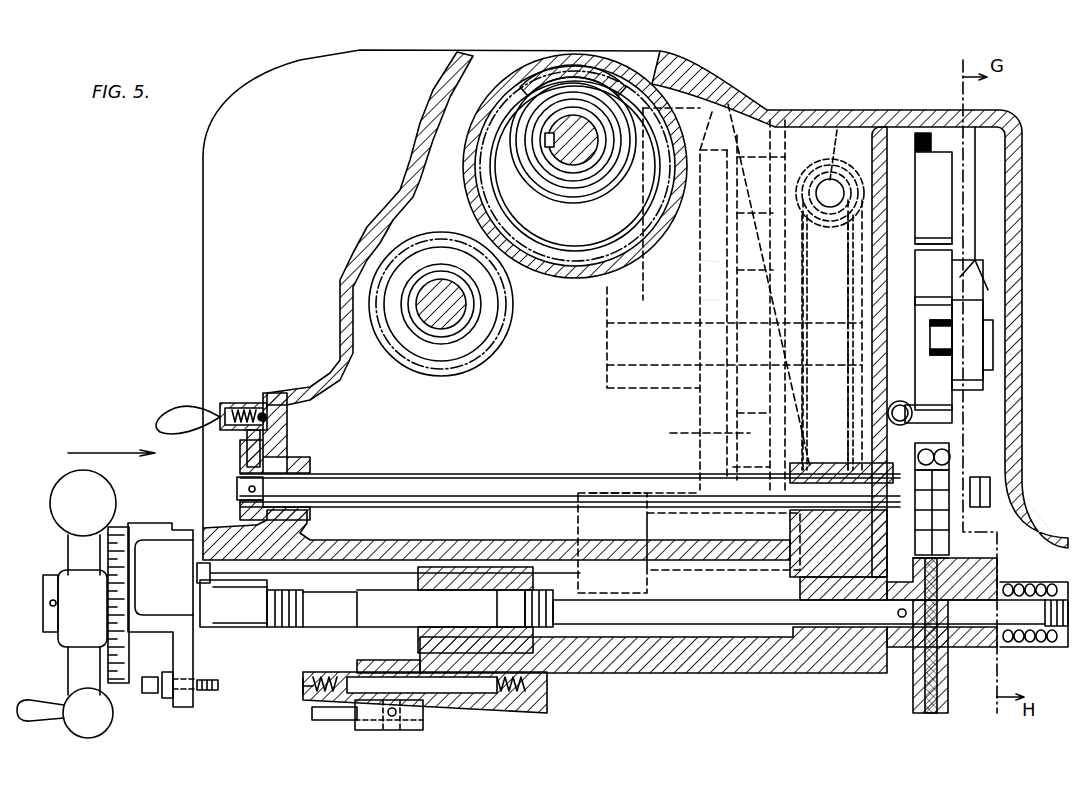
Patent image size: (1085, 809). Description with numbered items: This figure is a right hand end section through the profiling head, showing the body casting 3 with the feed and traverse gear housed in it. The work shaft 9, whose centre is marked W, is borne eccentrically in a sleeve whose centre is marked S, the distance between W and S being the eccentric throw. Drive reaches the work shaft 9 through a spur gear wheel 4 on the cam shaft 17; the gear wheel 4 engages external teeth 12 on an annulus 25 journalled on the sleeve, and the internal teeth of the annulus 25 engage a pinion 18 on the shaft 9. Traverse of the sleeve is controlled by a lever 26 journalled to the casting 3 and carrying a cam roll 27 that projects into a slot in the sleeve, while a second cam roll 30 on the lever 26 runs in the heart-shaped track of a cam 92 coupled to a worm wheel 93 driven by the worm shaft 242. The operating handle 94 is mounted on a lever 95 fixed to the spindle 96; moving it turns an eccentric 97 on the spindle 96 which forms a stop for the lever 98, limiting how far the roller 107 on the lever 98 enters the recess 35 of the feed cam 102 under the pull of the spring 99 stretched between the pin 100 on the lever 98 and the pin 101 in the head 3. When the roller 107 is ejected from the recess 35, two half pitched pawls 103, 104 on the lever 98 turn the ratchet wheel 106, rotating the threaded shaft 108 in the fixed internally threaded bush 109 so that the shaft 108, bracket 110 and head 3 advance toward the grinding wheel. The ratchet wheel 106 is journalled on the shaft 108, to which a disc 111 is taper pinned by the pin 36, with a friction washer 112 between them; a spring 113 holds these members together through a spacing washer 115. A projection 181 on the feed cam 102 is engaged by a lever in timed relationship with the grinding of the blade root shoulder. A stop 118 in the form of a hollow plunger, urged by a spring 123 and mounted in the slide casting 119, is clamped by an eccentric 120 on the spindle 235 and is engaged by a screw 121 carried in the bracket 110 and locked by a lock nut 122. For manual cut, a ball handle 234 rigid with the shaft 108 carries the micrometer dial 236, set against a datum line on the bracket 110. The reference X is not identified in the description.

The profiling head body casting 3 is at (245, 230).
The spur gear wheel 4 is at (487, 366).
The work shaft 9 is at (600, 122).
The teeth 12 is at (452, 76).
The cam shaft 17 is at (450, 300).
The pinion 18 is at (540, 183).
The annulus 25 is at (482, 118).
The lever 26 is at (706, 258).
The cam roll 27 is at (710, 113).
The second cam roll 30 is at (770, 300).
The recess 35 is at (937, 298).
The pin 36 is at (867, 643).
The cam 92 is at (700, 434).
The worm wheel 93 is at (872, 270).
The operating handle 94 is at (183, 410).
The lever 95 is at (245, 450).
The spindle 96 is at (440, 486).
The eccentric 97 is at (915, 458).
The lever 98 is at (960, 413).
The spring 99 is at (910, 405).
The pin 100 is at (935, 410).
The pin 101 is at (887, 410).
The feed cam 102 is at (940, 205).
The half pitched pawl 103 is at (955, 480).
The half pitched pawl 104 is at (950, 453).
The ratchet wheel 106 is at (948, 693).
The roller 107 is at (940, 340).
The shaft 108 is at (673, 612).
The bush 109 is at (470, 580).
The bracket 110 is at (150, 523).
The disc 111 is at (913, 675).
The friction washer 112 is at (940, 663).
The spring 113 is at (1022, 645).
The spacing washer 115 is at (1000, 580).
The stop 118 is at (303, 688).
The profile head slide casting 119 is at (590, 660).
The eccentric 120 is at (390, 705).
The screw 121 is at (201, 680).
The lock nut 122 is at (164, 675).
The spring 123 is at (320, 677).
The projection 181 is at (932, 138).
The ball handle 234 is at (92, 700).
The spindle 235 is at (340, 700).
The micrometer dial 236 is at (130, 592).
The worm shaft 242 is at (848, 110).
The centre of eccentric sleeve S is at (577, 165).
The centre of work shaft W is at (580, 133).
The direction arrow X is at (111, 443).